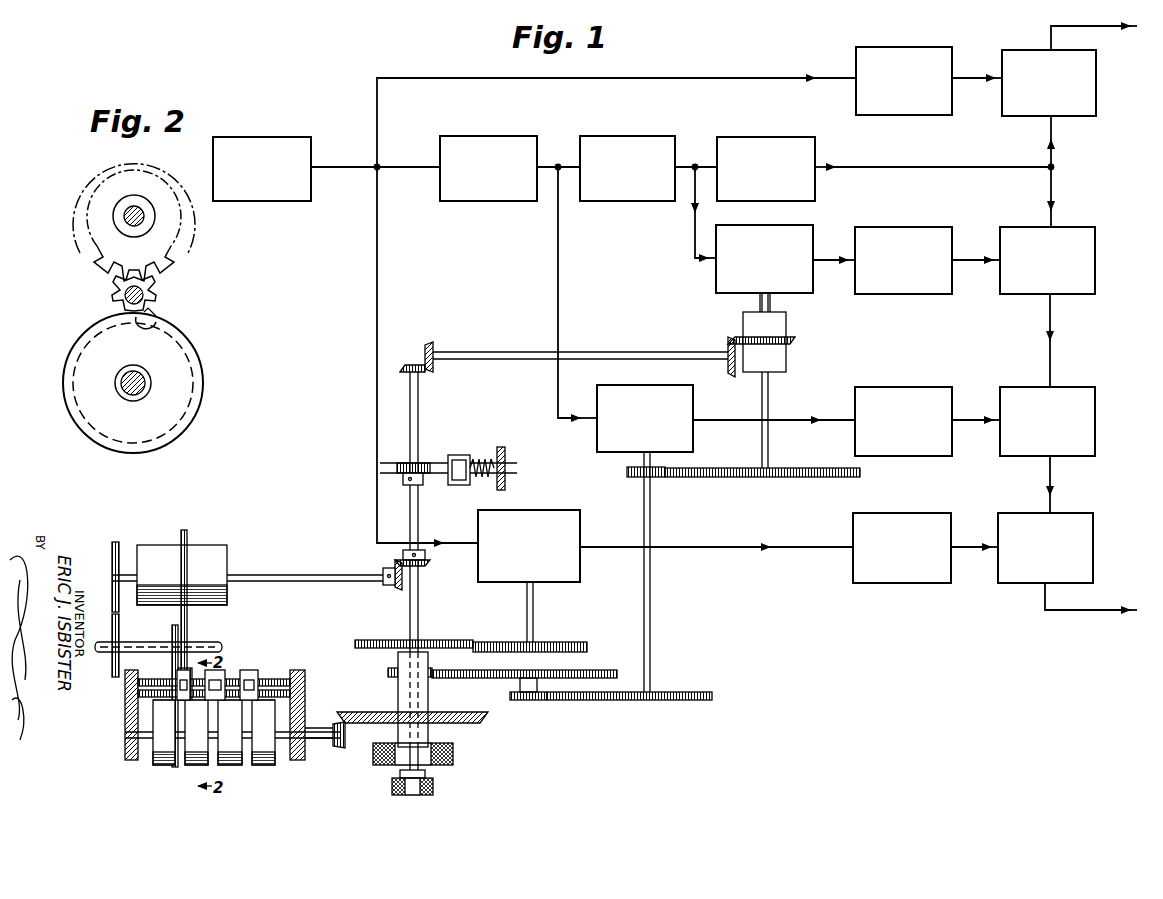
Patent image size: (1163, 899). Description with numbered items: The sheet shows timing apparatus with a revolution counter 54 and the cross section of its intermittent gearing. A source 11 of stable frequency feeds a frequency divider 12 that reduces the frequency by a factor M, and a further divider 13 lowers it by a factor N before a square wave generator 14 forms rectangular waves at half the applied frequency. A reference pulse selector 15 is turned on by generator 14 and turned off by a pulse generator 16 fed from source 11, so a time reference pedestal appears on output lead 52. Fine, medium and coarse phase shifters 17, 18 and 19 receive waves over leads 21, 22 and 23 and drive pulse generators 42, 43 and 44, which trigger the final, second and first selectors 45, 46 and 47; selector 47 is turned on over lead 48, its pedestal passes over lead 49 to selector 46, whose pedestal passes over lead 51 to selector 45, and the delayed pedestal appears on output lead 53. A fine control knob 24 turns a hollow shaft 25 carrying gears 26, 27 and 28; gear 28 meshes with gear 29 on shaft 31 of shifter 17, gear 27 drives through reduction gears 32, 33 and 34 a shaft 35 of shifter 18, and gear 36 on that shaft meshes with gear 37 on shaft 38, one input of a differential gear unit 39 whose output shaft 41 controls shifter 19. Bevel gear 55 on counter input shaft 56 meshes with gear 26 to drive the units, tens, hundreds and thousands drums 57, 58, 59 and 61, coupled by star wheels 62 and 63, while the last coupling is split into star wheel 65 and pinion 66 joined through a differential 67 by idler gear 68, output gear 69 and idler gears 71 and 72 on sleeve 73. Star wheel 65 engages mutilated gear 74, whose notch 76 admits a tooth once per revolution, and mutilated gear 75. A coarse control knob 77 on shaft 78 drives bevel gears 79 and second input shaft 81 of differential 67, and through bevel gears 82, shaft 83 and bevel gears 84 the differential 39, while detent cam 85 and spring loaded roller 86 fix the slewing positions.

In FIG. 1, the source of stable frequency 11 is at (283, 137).
In FIG. 1, the frequency divider 12 is at (504, 136).
In FIG. 1, the frequency divider 13 is at (644, 136).
In FIG. 1, the square wave generator 14 is at (779, 137).
In FIG. 1, the reference pulse selector 15 is at (1096, 70).
In FIG. 1, the pulse generator 16 is at (929, 47).
In FIG. 1, the fine phase shifter 17 is at (545, 510).
In FIG. 1, the medium phase shifter 18 is at (655, 385).
In FIG. 1, the coarse phase shifter 19 is at (793, 225).
In FIG. 1, the lead 21 is at (377, 295).
In FIG. 1, the lead 22 is at (558, 295).
In FIG. 1, the lead 23 is at (695, 240).
In FIG. 1, the fine control knob 24 is at (453, 752).
In FIG. 1, the hollow shaft 25 is at (398, 694).
In FIG. 1, the gear 26 is at (488, 718).
In FIG. 1, the gear 27 is at (388, 670).
In FIG. 1, the gear 28 is at (356, 640).
In FIG. 1, the gear 29 is at (510, 642).
In FIG. 1, the shaft 31 is at (540, 614).
In FIG. 1, the speed reduction gear 32 is at (590, 670).
In FIG. 1, the speed reduction gear 33 is at (535, 700).
In FIG. 1, the speed reduction gear 34 is at (652, 700).
In FIG. 1, the shaft 35 is at (650, 614).
In FIG. 1, the gear 36 is at (652, 477).
In FIG. 1, the gear 37 is at (798, 477).
In FIG. 1, the shaft 38 is at (768, 430).
In FIG. 1, the differential gear unit 39 is at (786, 332).
In FIG. 1, the output shaft 41 is at (768, 298).
In FIG. 1, the pulse generator 42 is at (912, 513).
In FIG. 1, the pulse generator 43 is at (900, 387).
In FIG. 1, the pulse generator 44 is at (924, 227).
In FIG. 1, the final selector 45 is at (1093, 522).
In FIG. 1, the second selector 46 is at (1095, 397).
In FIG. 1, the first selector 47 is at (1095, 240).
In FIG. 1, the lead 48 is at (1051, 222).
In FIG. 1, the lead 49 is at (1050, 350).
In FIG. 1, the lead 51 is at (1050, 490).
In FIG. 1, the output lead 52 is at (1100, 26).
In FIG. 1, the output lead 53 is at (1075, 612).
In FIG. 1, the revolution counter 54 is at (101, 735).
In FIG. 1, the bevel gear 55 is at (339, 748).
In FIG. 1, the counter input shaft 56 is at (312, 738).
In FIG. 1, the units drum 57 is at (266, 765).
In FIG. 1, the tens drum 58 is at (229, 765).
In FIG. 1, the hundreds drum 59 is at (188, 765).
In FIG. 1, the thousands drum 61 is at (160, 765).
In FIG. 1, the star wheel 62 is at (250, 672).
In FIG. 1, the star wheel 63 is at (215, 672).
In FIG. 1, the star wheel 65 is at (188, 674).
In FIG. 2, the star wheel 65 is at (161, 302).
In FIG. 1, the pinion 66 is at (177, 676).
In FIG. 1, the differential gear unit 67 is at (220, 545).
In FIG. 1, the idler gear 68 is at (188, 632).
In FIG. 2, the idler gear 68 is at (193, 232).
In FIG. 1, the output gear 69 is at (112, 580).
In FIG. 1, the idler gear 71 is at (119, 628).
In FIG. 1, the idler gear 72 is at (174, 630).
In FIG. 1, the sleeve 73 is at (118, 652).
In FIG. 2, the mutilated gear 74 is at (188, 422).
In FIG. 2, the mutilated gear 75 is at (193, 386).
In FIG. 2, the notch 76 is at (158, 330).
In FIG. 1, the coarse control knob 77 is at (433, 786).
In FIG. 1, the shaft 78 is at (418, 600).
In FIG. 1, the bevel gears 79 is at (395, 560).
In FIG. 1, the second input shaft 81 is at (288, 575).
In FIG. 1, the bevel gears 82 is at (433, 372).
In FIG. 1, the shaft 83 is at (588, 352).
In FIG. 1, the bevel gears 84 is at (728, 338).
In FIG. 1, the detent cam 85 is at (405, 463).
In FIG. 1, the spring loaded roller 86 is at (450, 455).